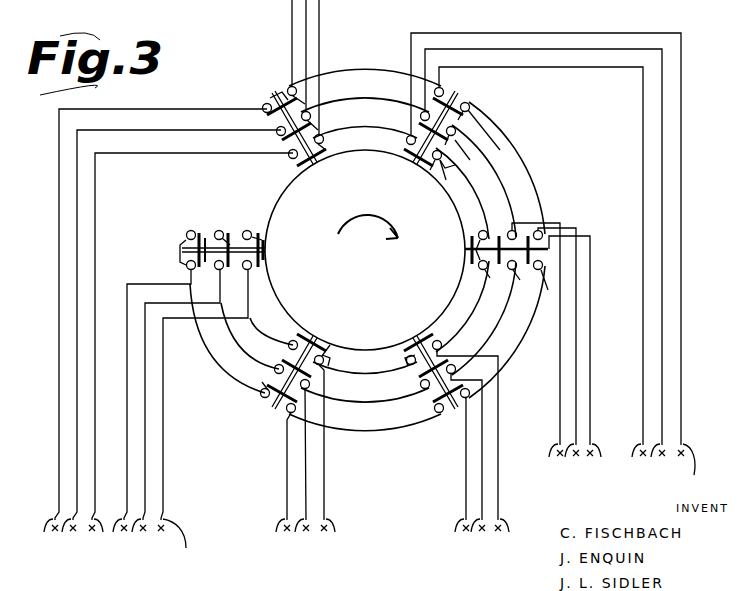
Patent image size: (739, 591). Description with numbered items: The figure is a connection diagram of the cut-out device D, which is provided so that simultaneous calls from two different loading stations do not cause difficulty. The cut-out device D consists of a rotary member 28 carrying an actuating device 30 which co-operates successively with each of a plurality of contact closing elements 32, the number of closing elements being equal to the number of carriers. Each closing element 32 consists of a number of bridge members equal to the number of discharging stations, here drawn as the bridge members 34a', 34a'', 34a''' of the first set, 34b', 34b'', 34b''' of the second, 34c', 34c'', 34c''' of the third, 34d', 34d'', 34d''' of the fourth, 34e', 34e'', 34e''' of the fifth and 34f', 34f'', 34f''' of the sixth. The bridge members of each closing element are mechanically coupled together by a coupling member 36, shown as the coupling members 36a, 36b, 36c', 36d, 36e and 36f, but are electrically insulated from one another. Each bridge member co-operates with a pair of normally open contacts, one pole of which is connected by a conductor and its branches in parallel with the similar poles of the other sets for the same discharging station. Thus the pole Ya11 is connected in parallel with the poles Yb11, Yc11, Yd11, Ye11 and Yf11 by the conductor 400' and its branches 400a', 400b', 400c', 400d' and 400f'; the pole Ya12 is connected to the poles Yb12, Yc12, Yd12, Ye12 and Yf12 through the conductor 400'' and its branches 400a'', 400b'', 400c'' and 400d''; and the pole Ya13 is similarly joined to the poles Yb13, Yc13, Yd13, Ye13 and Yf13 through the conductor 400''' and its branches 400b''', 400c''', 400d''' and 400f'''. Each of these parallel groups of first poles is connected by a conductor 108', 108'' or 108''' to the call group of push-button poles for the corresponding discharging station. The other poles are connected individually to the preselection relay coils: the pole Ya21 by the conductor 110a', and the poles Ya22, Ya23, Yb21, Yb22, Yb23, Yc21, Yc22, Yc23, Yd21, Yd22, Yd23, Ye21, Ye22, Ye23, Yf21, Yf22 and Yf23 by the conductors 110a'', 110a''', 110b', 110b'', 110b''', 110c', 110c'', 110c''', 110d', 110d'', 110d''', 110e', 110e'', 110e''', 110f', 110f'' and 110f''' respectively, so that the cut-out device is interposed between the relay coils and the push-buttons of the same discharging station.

The cut-out device D is at (285, 182).
The rotary member 28 is at (375, 287).
The actuating device 30 is at (262, 235).
The contact closing element 32 is at (205, 245).
The coupling member 36 is at (203, 238).
The bridge member 34a' is at (284, 252).
The bridge member 34a'' is at (272, 269).
The bridge member 34a''' is at (163, 250).
The bridge member 34b' is at (322, 163).
The bridge member 34b'' is at (324, 117).
The bridge member 34b''' is at (268, 97).
The bridge member 34c' is at (406, 171).
The bridge member 34c'' is at (453, 125).
The bridge member 34c''' is at (458, 93).
The bridge member 34d' is at (447, 246).
The bridge member 34d'' is at (499, 233).
The bridge member 34d''' is at (553, 233).
The bridge member 34e' is at (395, 342).
The bridge member 34e'' is at (482, 380).
The bridge member 34e''' is at (441, 415).
The bridge member 34f' is at (330, 332).
The bridge member 34f'' is at (181, 197).
The bridge member 34f''' is at (262, 420).
The coupling member 36a is at (178, 246).
The coupling member 36b is at (283, 140).
The coupling member 36c' is at (416, 162).
The coupling member 36d is at (476, 252).
The coupling member 36e is at (0, 0).
The coupling member 36f is at (330, 362).
The branch conductor 400a' is at (287, 240).
The branch conductor 400a'' is at (238, 216).
The branch conductor 400b' is at (343, 142).
The branch conductor 400b'' is at (347, 89).
The branch conductor 400b''' is at (342, 66).
The branch conductor 400c' is at (412, 186).
The branch conductor 400c'' is at (495, 125).
The branch conductor 400c''' is at (495, 95).
The branch conductor 400d' is at (449, 286).
The branch conductor 400d'' is at (462, 296).
The branch conductor 400d''' is at (543, 325).
The branch conductor 400f' is at (337, 326).
The branch conductor 400f''' is at (227, 408).
The conductor 400' is at (246, 90).
The conductor 400'' is at (261, 80).
The conductor 400''' is at (284, 75).
The conductor 108' is at (337, 67).
The conductor 108'' is at (278, 55).
The conductor 108''' is at (272, 43).
The contact pole Ya11 is at (252, 233).
The contact pole Ya12 is at (222, 232).
The contact pole Ya13 is at (190, 230).
The contact pole Ya21 is at (251, 268).
The contact pole Ya22 is at (215, 268).
The contact pole Ya23 is at (186, 266).
The contact pole Yb11 is at (323, 137).
The contact pole Yb12 is at (308, 112).
The contact pole Yb13 is at (288, 88).
The contact pole Yb21 is at (288, 155).
The contact pole Yb22 is at (274, 131).
The contact pole Yb23 is at (260, 108).
The contact pole Yc11 is at (438, 160).
The contact pole Yc12 is at (451, 136).
The contact pole Yc13 is at (470, 106).
The contact pole Yc21 is at (406, 140).
The contact pole Yc22 is at (420, 116).
The contact pole Yc23 is at (439, 87).
The contact pole Yd11 is at (478, 266).
The contact pole Yd12 is at (509, 270).
The contact pole Yd13 is at (537, 270).
The contact pole Yd21 is at (478, 233).
The contact pole Yd22 is at (511, 230).
The contact pole Yd23 is at (539, 230).
The contact pole Ye11 is at (410, 365).
The contact pole Ye12 is at (424, 389).
The contact pole Ye13 is at (437, 413).
The contact pole Ye21 is at (437, 340).
The contact pole Ye22 is at (453, 364).
The contact pole Ye23 is at (464, 398).
The contact pole Yf11 is at (288, 345).
The contact pole Yf12 is at (274, 370).
The contact pole Yf13 is at (260, 394).
The contact pole Yf21 is at (322, 365).
The contact pole Yf22 is at (309, 388).
The contact pole Yf23 is at (289, 413).
The conductor 110a' is at (203, 420).
The conductor 110a'' is at (176, 410).
The conductor 110a''' is at (152, 420).
The conductor 110b' is at (189, 351).
The conductor 110b'' is at (165, 350).
The conductor 110b''' is at (148, 329).
The conductor 110c' is at (569, 264).
The conductor 110c'' is at (555, 262).
The conductor 110c''' is at (555, 281).
The conductor 110d' is at (587, 355).
The conductor 110d'' is at (567, 361).
The conductor 110d''' is at (543, 349).
The conductor 110e' is at (476, 450).
The conductor 110e'' is at (471, 472).
The conductor 110e''' is at (442, 474).
The conductor 110f' is at (335, 457).
The conductor 110f'' is at (301, 479).
The conductor 110f''' is at (283, 481).